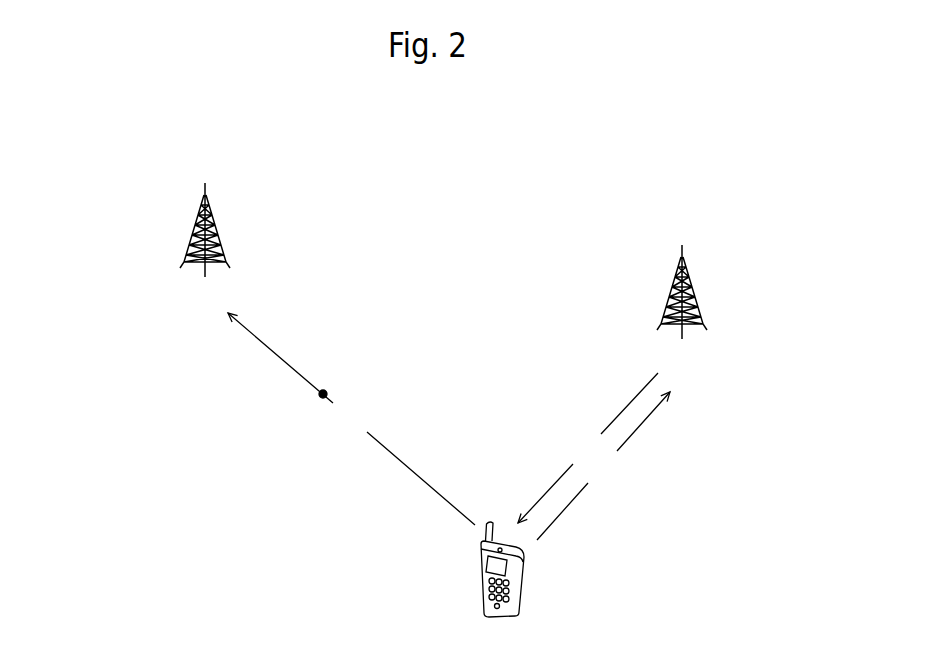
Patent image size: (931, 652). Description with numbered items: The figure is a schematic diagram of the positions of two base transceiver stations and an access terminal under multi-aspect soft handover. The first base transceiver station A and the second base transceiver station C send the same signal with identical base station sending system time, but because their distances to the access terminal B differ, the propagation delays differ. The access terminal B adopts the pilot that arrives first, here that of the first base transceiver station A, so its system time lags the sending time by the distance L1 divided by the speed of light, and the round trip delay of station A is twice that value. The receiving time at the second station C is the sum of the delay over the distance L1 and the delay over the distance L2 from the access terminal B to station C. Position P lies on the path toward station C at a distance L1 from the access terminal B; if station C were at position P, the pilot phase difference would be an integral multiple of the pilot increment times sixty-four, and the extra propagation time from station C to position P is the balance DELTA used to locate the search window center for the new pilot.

The base transceiver station 1 A is at (671, 311).
The base transceiver station 2 C is at (214, 249).
The access terminal B is at (524, 569).
The position P is at (337, 388).
The distance L1 is at (594, 456).
The distance L2 is at (351, 419).